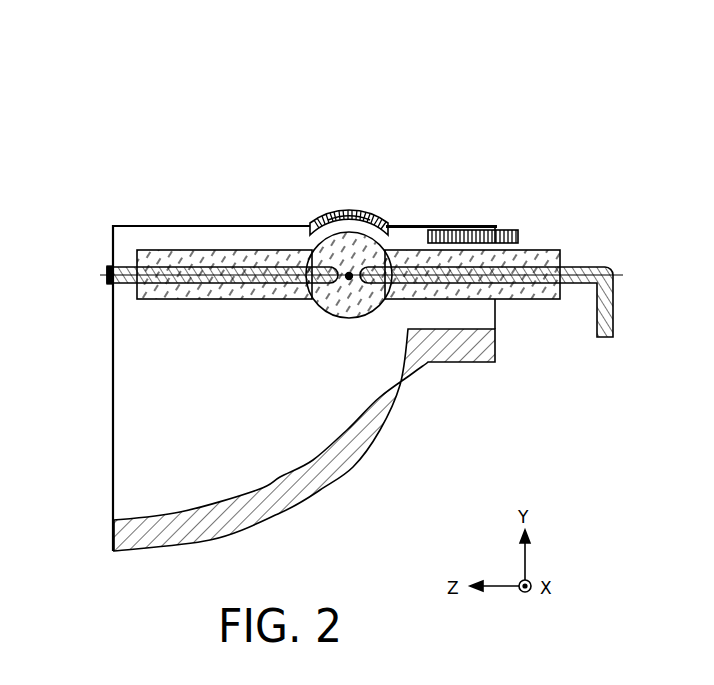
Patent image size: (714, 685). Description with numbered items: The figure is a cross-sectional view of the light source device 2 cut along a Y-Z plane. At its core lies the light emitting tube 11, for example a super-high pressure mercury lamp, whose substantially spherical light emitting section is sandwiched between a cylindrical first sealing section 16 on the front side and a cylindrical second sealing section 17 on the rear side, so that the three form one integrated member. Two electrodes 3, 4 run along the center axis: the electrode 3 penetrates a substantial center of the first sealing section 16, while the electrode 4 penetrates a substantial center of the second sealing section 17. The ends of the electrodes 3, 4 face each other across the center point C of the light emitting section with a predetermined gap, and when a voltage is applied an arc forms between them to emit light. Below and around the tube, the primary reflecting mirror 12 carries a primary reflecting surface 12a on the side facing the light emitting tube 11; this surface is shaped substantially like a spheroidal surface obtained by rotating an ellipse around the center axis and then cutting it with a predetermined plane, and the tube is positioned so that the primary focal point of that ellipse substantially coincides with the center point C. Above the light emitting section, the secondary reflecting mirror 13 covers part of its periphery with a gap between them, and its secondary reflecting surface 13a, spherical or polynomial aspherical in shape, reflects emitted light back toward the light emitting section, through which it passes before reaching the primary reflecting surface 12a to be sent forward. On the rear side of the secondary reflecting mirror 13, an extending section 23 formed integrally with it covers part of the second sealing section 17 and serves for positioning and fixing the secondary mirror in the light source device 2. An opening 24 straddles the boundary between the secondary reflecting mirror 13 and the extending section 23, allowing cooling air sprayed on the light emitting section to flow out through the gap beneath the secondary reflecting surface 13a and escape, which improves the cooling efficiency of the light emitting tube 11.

The light source device 2 is at (460, 122).
The electrode 3 is at (125, 258).
The electrode 4 is at (613, 328).
The light emitting tube 11 is at (282, 311).
The primary reflecting mirror 12 is at (353, 471).
The primary reflecting surface 12a is at (157, 519).
The secondary reflecting mirror 13 is at (326, 212).
The secondary reflecting surface 13a is at (357, 216).
The first sealing section 16 is at (195, 256).
The second sealing section 17 is at (556, 250).
The extending section 23 is at (508, 230).
The opening 24 is at (395, 226).
The center point C is at (348, 279).